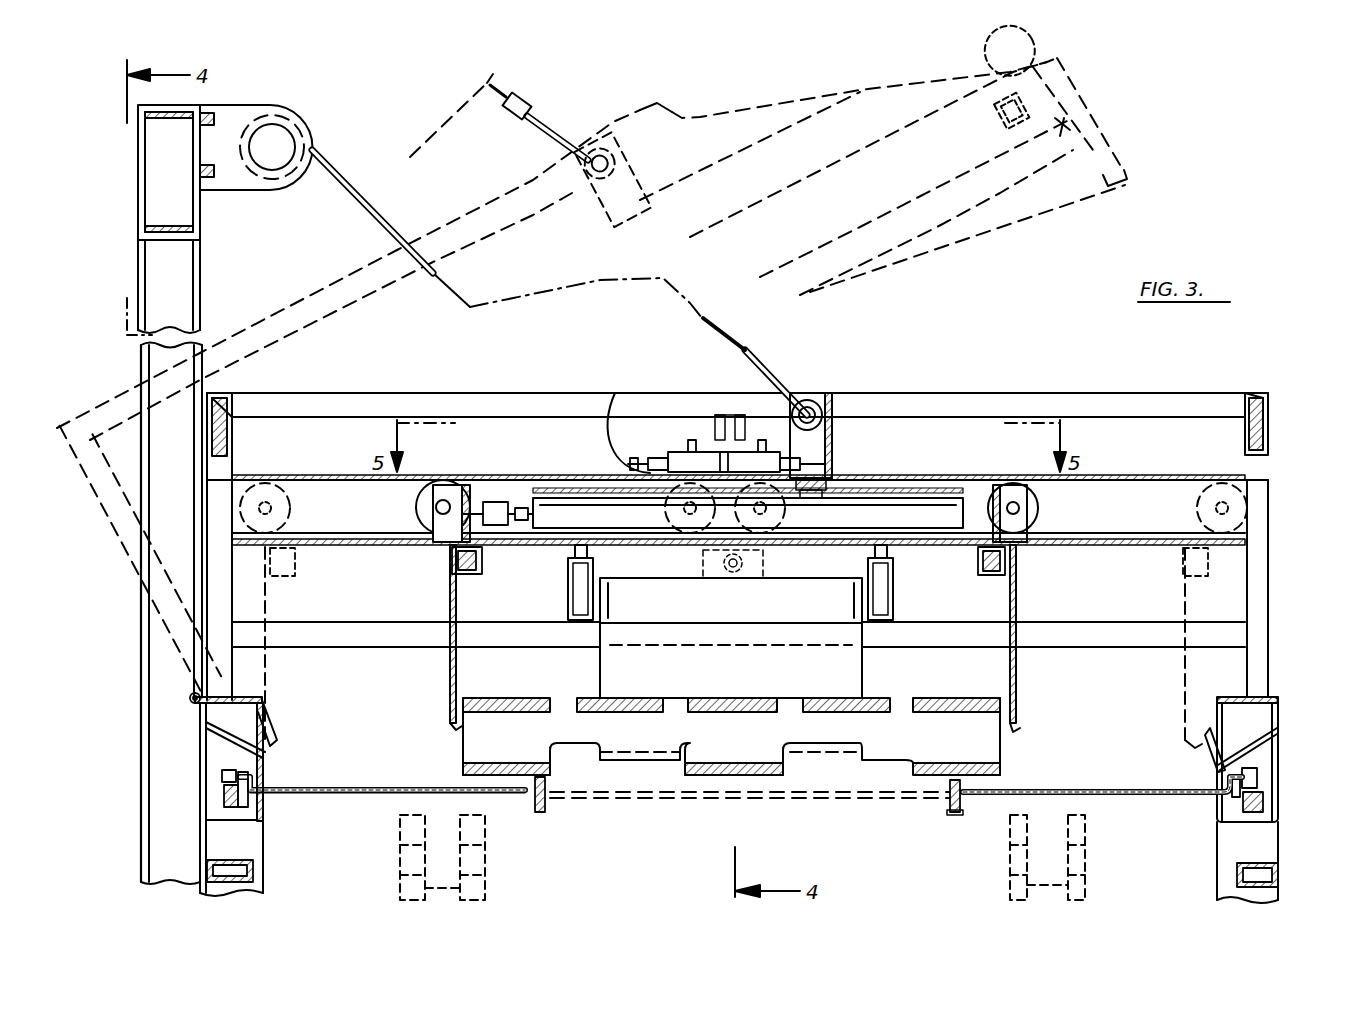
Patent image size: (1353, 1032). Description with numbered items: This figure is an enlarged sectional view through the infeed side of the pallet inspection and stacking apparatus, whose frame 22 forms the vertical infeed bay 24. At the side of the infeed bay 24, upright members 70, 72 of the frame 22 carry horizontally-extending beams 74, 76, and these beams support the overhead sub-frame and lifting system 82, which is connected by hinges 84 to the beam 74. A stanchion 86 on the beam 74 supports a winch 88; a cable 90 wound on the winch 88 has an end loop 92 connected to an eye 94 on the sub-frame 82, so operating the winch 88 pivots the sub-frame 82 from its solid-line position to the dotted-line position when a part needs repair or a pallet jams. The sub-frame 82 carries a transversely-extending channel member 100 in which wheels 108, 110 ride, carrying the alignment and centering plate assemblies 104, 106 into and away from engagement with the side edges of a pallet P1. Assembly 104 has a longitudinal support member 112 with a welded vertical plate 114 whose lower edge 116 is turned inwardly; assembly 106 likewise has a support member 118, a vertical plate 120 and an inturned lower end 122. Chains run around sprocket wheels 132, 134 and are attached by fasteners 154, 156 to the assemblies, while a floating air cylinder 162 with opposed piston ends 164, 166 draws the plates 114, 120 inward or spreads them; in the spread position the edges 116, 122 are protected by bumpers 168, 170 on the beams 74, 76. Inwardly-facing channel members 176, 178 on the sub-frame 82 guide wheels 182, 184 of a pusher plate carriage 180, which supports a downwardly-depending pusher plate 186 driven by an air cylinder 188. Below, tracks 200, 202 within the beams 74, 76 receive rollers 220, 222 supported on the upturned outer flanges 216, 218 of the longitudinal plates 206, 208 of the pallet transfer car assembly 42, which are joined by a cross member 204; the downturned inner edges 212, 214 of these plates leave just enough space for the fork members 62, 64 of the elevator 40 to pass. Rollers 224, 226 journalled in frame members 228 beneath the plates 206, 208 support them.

The frame 22 is at (198, 838).
The vertical infeed bay 24 is at (1262, 880).
The elevator 40 is at (948, 812).
The pallet transfer car assembly 42 is at (385, 798).
The fork member 62 is at (548, 800).
The fork member 64 is at (948, 812).
The upright member 70 is at (255, 870).
The upright member 72 is at (1280, 862).
The horizontally-extending beam 74 is at (150, 745).
The horizontally-extending beam 76 is at (1280, 740).
The overhead sub-frame and lifting system 82 is at (1040, 392).
The hinges 84 is at (189, 698).
The stanchion 86 is at (200, 278).
The winch 88 is at (328, 98).
The cable 90 is at (366, 180).
The end loop 92 is at (556, 125).
The eye 94 is at (822, 395).
The transversely-extending channel member 100 is at (1098, 545).
The alignment and centering plate assembly 104 is at (312, 480).
The alignment and centering plate assembly 106 is at (915, 478).
The wheels 108 is at (268, 484).
The wheels 110 is at (1040, 512).
The longitudinal support member 112 is at (283, 576).
The vertical plate 114 is at (275, 665).
The lower edge 116 is at (278, 725).
The support member 118 is at (992, 578).
The vertical plate 120 is at (1018, 690).
The lower end 122 is at (1020, 728).
The sprocket wheel 132 is at (690, 450).
The sprocket wheel 134 is at (745, 390).
The fastener 154 is at (620, 388).
The fastener 156 is at (832, 472).
The air cylinder 162 is at (940, 498).
The piston end 164 is at (505, 500).
The piston end 166 is at (1012, 484).
The bumper 168 is at (272, 750).
The bumper 170 is at (1212, 745).
The longitudinal channel member 176 is at (893, 596).
The longitudinal channel member 178 is at (570, 594).
The pusher plate carriage 180 is at (790, 583).
The wheels 182 is at (893, 572).
The wheels 184 is at (568, 572).
The pusher plate 186 is at (862, 660).
The air cylinder 188 is at (733, 580).
The track 200 is at (263, 820).
The track 202 is at (1247, 800).
The cross member 204 is at (660, 805).
The longitudinal plate 206 is at (378, 788).
The longitudinal plate 208 is at (1140, 797).
The downturned inner edge 212 is at (536, 812).
The downturned inner edge 214 is at (960, 805).
The upwardly turned outer flange 216 is at (252, 782).
The upwardly turned outer flange 218 is at (1240, 776).
The roller 220 is at (222, 782).
The roller 222 is at (1262, 782).
The rollers 224 is at (404, 890).
The rollers 226 is at (1085, 812).
The frame members 228 is at (400, 855).
The pallet P1 is at (1000, 772).